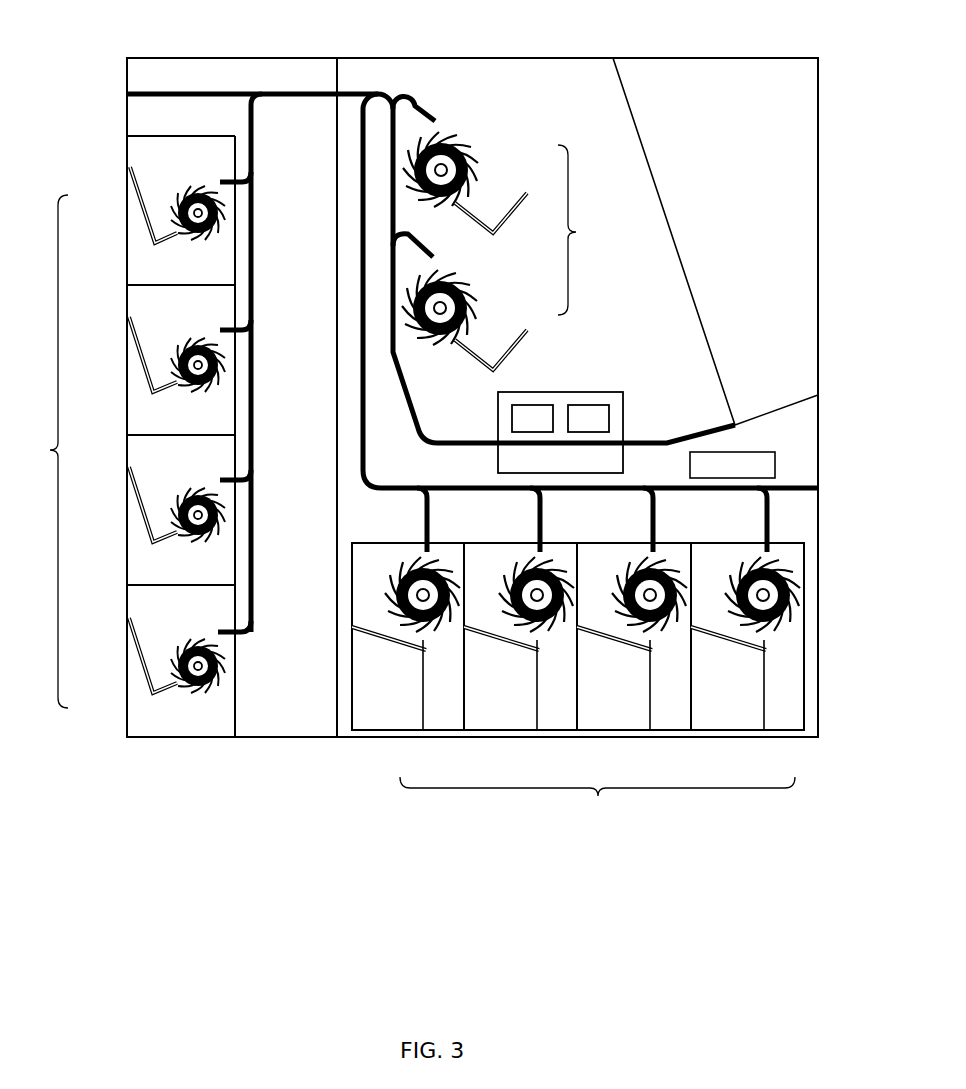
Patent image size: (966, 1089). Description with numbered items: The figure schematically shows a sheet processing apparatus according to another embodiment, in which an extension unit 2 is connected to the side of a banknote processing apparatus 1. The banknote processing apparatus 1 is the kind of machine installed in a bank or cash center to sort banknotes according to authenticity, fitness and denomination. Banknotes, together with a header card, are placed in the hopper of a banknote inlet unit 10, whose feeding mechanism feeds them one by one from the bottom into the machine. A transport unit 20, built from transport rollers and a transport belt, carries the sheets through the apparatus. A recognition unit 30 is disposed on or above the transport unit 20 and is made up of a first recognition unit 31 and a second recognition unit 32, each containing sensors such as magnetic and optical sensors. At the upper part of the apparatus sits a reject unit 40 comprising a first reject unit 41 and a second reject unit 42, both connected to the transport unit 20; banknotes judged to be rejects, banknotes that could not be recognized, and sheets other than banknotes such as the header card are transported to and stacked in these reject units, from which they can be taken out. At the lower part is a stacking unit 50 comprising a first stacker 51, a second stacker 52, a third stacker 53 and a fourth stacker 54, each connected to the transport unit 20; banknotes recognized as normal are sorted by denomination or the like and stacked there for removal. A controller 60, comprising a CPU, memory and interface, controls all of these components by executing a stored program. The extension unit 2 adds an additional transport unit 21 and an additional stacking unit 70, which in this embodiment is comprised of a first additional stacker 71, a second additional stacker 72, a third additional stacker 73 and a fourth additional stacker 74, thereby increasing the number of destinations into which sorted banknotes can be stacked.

The banknote processing apparatus 1 is at (558, 58).
The extension unit 2 is at (218, 58).
The banknote inlet unit 10 is at (772, 415).
The transport unit 20 is at (403, 398).
The additional transport unit 21 is at (303, 92).
The recognition unit 30 is at (565, 392).
The first recognition unit 31 is at (609, 418).
The second recognition unit 32 is at (498, 418).
The reject unit 40 is at (584, 230).
The first reject unit 41 is at (520, 333).
The second reject unit 42 is at (527, 190).
The stacking unit 50 is at (578, 684).
The first stacker 51 is at (410, 737).
The second stacker 52 is at (523, 737).
The third stacker 53 is at (637, 737).
The fourth stacker 54 is at (750, 737).
The controller 60 is at (775, 466).
The additional stacking unit 70 is at (42, 451).
The first additional stacker 71 is at (127, 210).
The second additional stacker 72 is at (127, 370).
The third additional stacker 73 is at (127, 526).
The fourth additional stacker 74 is at (127, 684).